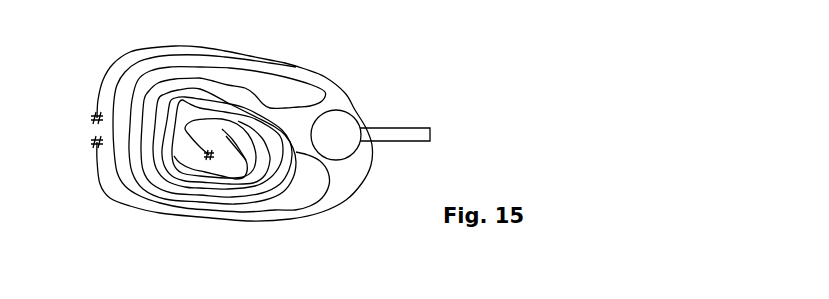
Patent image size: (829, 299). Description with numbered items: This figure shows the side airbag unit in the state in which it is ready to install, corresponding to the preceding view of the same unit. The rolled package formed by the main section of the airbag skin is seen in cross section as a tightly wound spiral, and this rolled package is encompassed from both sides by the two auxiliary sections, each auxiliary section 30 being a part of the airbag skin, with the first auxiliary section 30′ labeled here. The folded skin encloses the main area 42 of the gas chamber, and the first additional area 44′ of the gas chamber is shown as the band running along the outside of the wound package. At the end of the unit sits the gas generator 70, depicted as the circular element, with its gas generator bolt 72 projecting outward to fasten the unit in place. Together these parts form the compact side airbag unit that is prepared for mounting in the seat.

The auxiliary section 30 is at (188, 74).
The first auxiliary section 30′ is at (207, 214).
The first additional area 44′ is at (157, 213).
The main area 42 is at (244, 160).
The gas generator 70 is at (337, 150).
The gas generator bolt 72 is at (402, 136).